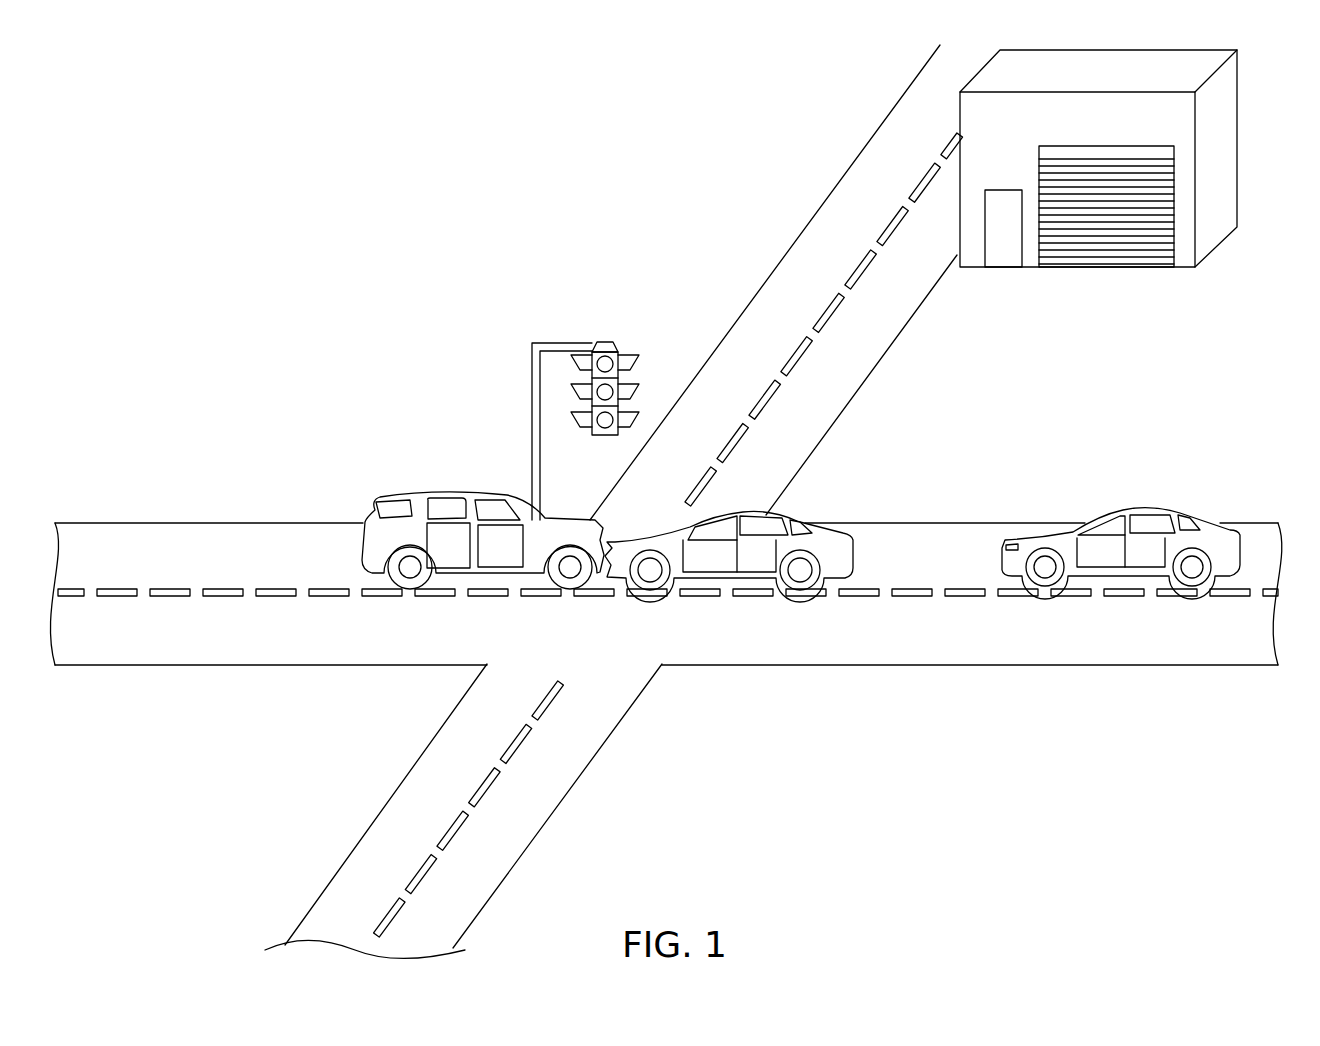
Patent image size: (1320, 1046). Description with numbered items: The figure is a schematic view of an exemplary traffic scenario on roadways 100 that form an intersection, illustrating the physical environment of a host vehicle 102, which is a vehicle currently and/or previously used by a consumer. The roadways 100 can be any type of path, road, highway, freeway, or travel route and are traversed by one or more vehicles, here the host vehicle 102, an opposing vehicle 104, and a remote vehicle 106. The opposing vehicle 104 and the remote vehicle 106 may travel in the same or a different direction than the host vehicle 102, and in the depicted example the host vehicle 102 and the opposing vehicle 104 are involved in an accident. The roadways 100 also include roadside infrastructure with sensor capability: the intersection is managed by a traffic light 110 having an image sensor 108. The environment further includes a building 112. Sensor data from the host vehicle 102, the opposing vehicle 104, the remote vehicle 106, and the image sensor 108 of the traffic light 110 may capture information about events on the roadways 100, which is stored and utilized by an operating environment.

The roadways 100 is at (432, 275).
The host vehicle 102 is at (832, 522).
The opposing vehicle 104 is at (462, 496).
The remote vehicle 106 is at (1137, 510).
The image sensor 108 is at (607, 342).
The traffic light 110 is at (620, 378).
The building 112 is at (1220, 168).